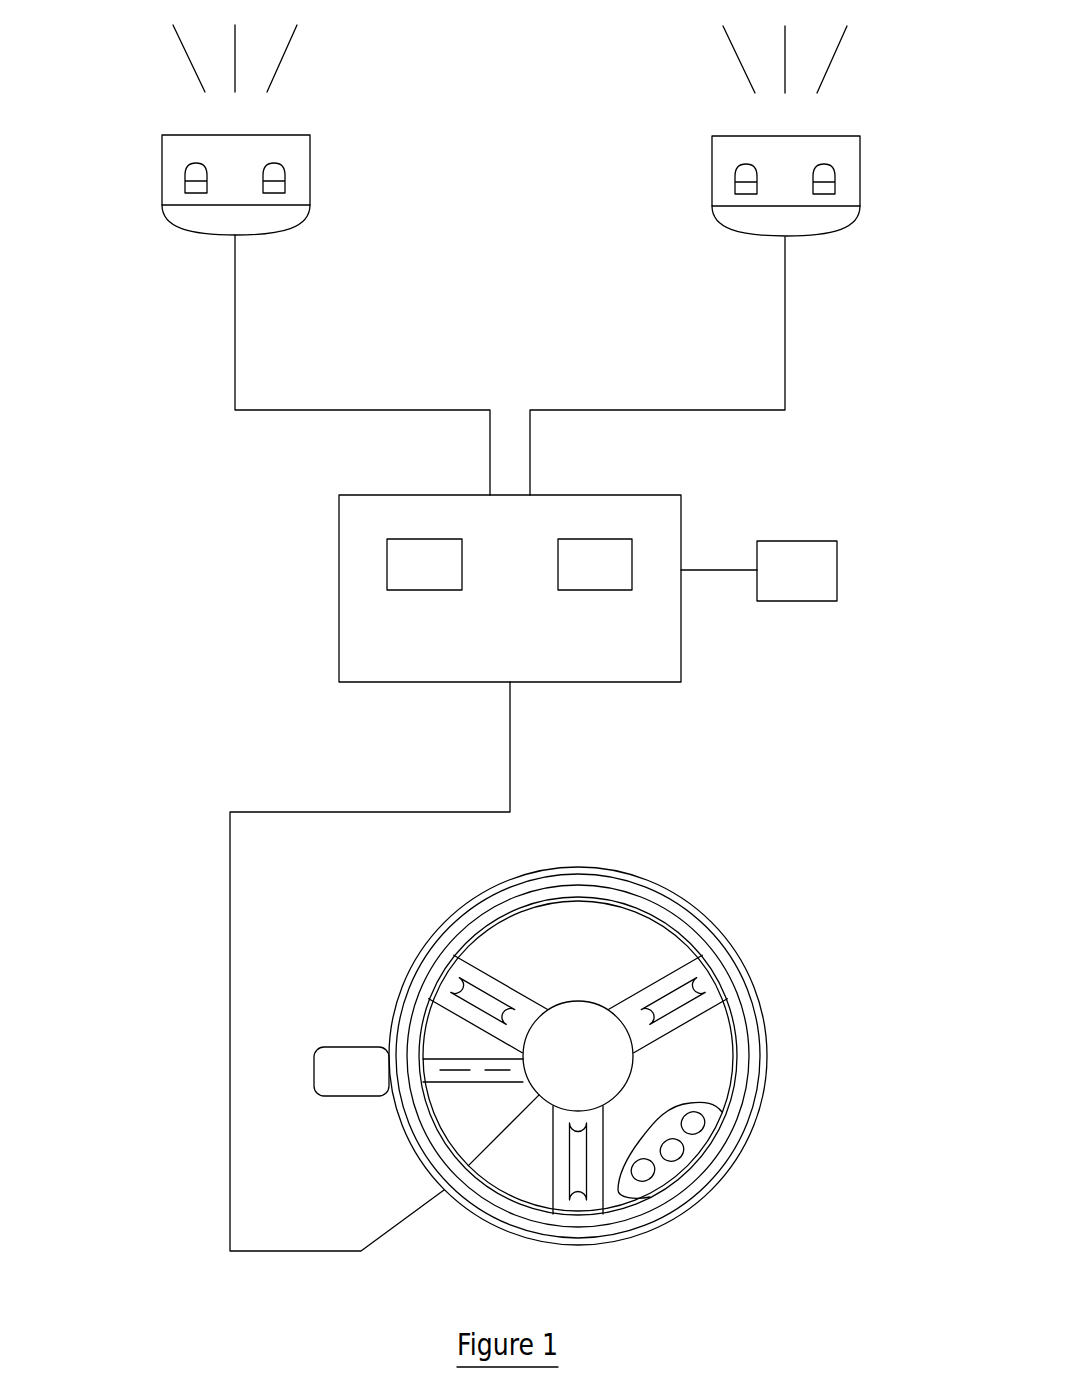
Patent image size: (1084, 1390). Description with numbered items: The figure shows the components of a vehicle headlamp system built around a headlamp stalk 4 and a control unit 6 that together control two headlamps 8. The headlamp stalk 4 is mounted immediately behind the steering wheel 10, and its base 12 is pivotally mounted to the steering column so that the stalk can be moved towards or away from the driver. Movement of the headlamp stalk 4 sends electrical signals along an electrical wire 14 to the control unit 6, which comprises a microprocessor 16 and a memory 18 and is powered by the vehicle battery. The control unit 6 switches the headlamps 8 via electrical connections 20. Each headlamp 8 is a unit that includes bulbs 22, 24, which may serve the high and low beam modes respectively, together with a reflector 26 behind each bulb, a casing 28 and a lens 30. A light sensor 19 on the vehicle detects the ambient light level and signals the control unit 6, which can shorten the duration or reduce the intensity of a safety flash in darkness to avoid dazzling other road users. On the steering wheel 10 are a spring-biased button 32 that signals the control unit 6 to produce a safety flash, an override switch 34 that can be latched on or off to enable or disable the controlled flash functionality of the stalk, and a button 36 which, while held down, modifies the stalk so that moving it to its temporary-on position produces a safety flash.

The headlamp stalk 4 is at (462, 1058).
The control unit 6 is at (510, 588).
The headlamp 8 is at (511, 176).
The steering wheel 10 is at (626, 1078).
The base 12 is at (523, 1077).
The electrical wire 14 is at (230, 1028).
The microprocessor 16 is at (409, 581).
The memory 18 is at (579, 581).
The light sensor 19 is at (781, 587).
The electrical connection 20 is at (368, 409).
The bulb 22 is at (196, 163).
The bulb 24 is at (273, 163).
The reflector 26 is at (192, 233).
The casing 28 is at (162, 167).
The lens 30 is at (233, 135).
The button 32 is at (702, 1128).
The override switch 34 is at (680, 1158).
The button 36 is at (647, 1180).